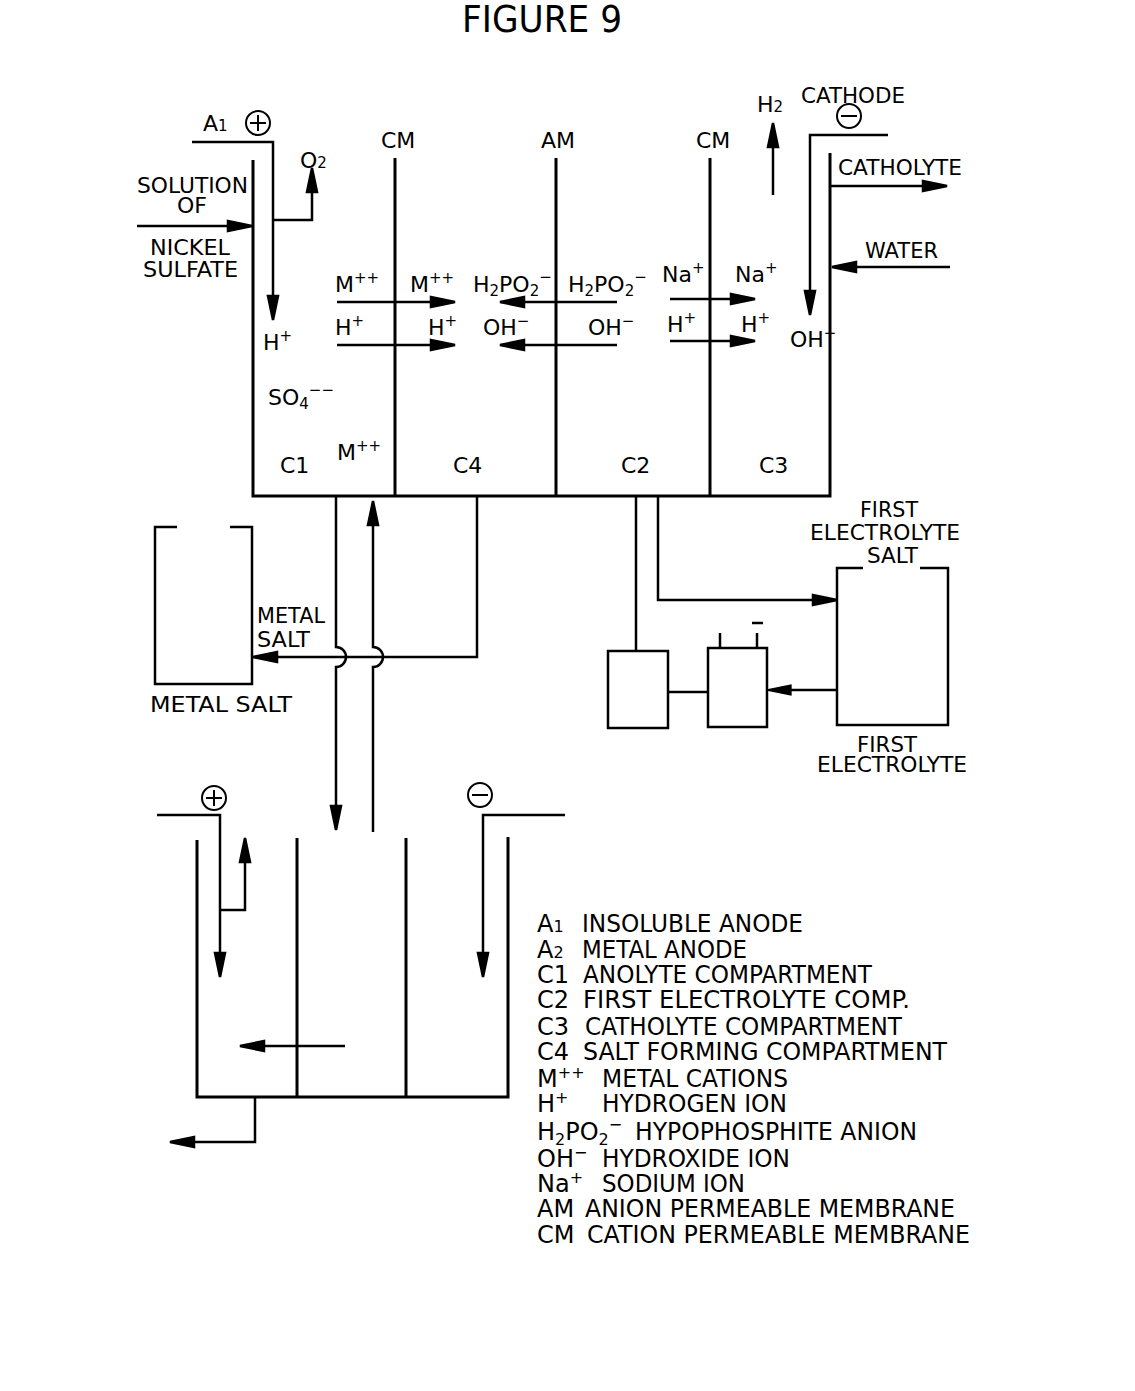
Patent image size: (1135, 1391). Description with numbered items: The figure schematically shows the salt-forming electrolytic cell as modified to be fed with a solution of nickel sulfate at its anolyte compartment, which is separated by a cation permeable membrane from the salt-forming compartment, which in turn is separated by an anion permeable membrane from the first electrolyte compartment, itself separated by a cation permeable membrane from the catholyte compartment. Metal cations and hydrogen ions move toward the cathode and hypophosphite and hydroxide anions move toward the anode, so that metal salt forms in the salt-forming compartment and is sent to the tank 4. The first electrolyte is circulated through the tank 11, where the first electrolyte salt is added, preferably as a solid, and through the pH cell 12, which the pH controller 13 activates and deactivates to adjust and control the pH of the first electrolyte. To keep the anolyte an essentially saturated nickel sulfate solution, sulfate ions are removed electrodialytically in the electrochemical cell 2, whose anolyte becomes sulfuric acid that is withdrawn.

The electrochemical cell 2 is at (384, 998).
The tank 4 is at (203, 605).
The tank 11 is at (857, 646).
The pH control cell 12 is at (731, 685).
The pH controller 13 is at (599, 628).